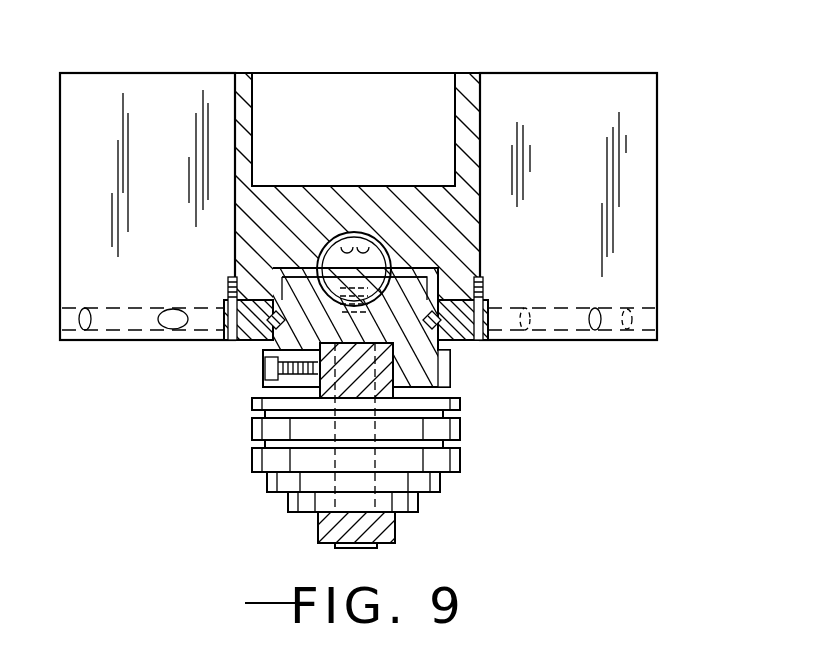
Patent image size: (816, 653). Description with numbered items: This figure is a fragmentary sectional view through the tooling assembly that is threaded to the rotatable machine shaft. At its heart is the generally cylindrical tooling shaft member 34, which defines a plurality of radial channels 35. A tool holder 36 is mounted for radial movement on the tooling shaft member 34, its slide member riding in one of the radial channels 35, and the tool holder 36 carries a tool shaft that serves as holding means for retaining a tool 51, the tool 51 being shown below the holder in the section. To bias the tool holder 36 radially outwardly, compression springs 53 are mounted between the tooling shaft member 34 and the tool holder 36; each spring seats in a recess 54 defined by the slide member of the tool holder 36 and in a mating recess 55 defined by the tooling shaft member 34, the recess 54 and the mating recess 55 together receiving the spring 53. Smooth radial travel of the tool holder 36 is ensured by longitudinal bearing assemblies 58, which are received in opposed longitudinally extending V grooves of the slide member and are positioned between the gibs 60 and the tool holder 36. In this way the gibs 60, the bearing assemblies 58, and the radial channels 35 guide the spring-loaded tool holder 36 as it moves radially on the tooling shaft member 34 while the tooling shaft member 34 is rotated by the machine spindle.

The tooling shaft member 34 is at (626, 73).
The radial channels 35 is at (433, 300).
The tool holders 36 is at (450, 377).
The tool 51 is at (462, 431).
The compression springs 53 is at (376, 246).
The recess 54 is at (373, 272).
The mating recesses 55 is at (336, 246).
The longitudinal bearing assemblies 58 is at (272, 328).
The gibs 60 is at (258, 341).